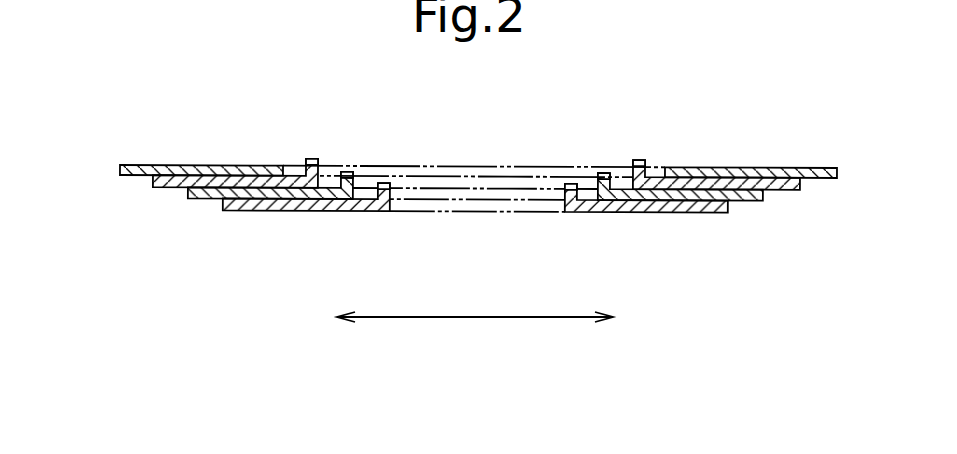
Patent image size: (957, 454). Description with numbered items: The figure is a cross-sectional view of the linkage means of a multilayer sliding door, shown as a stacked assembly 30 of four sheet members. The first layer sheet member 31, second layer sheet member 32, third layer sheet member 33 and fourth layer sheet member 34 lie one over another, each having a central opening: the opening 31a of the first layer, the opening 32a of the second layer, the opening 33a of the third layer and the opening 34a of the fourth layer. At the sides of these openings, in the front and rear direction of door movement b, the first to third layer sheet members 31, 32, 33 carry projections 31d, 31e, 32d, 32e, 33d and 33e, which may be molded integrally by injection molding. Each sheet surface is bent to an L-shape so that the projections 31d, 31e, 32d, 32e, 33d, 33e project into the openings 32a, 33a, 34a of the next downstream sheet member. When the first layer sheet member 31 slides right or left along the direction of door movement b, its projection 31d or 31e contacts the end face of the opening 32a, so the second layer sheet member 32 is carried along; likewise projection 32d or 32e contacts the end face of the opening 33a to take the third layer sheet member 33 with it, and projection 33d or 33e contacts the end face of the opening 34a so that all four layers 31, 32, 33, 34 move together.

The laminated body 30 is at (703, 224).
The first layer sheet member 31 is at (223, 205).
The second layer sheet member 32 is at (187, 192).
The third layer sheet member 33 is at (150, 180).
The fourth layer sheet member 34 is at (120, 169).
The opening of the first layer sheet member 31a is at (440, 210).
The opening of the second layer sheet member 32a is at (500, 205).
The opening of the third layer sheet member 33a is at (532, 177).
The opening of the fourth layer sheet member 34a is at (457, 166).
The projection of the first layer sheet member 31d is at (384, 182).
The projection of the second layer sheet member 32d is at (347, 171).
The projection of the third layer sheet member 33d is at (311, 158).
The projection of the first layer sheet member 31e is at (571, 182).
The projection of the second layer sheet member 32e is at (604, 171).
The projection of the third layer sheet member 33e is at (639, 158).
The direction of door movement b is at (483, 320).